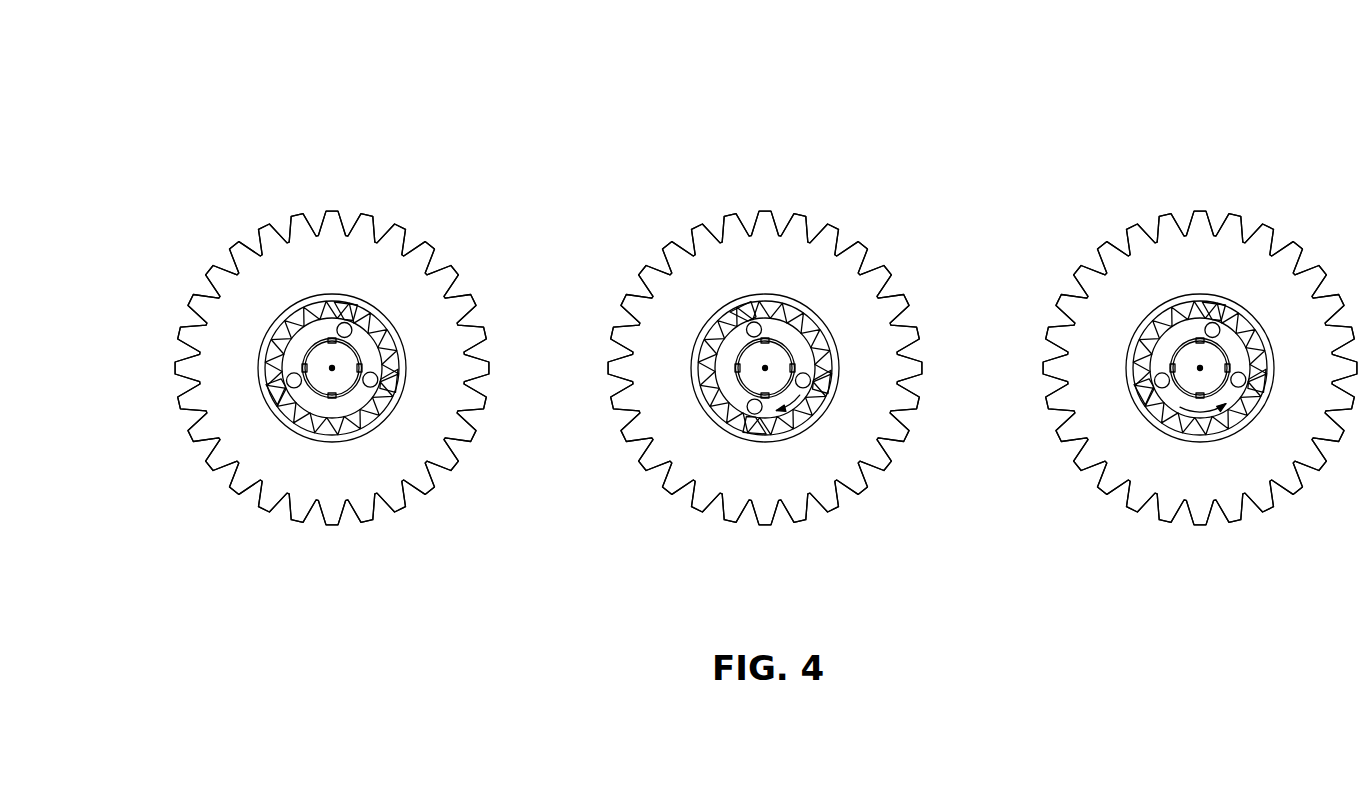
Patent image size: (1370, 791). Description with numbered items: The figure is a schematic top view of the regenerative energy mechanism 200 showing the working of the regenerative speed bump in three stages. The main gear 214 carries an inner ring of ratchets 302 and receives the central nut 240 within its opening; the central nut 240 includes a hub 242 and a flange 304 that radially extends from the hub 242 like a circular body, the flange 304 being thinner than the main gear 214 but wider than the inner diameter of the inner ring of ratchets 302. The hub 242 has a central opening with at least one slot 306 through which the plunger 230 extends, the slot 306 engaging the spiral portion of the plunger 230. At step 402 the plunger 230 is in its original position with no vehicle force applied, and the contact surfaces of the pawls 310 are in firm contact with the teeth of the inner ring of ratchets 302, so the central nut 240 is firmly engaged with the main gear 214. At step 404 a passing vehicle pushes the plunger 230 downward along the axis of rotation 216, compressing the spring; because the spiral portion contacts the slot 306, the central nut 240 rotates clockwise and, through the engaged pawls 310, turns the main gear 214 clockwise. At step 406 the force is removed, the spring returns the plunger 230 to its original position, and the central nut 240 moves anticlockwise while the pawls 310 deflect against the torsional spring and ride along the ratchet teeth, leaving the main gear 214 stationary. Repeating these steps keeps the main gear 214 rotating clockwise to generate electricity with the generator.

The regenerative energy mechanism 200 is at (188, 156).
The step 402 is at (309, 136).
The step 404 is at (633, 220).
The step 406 is at (1176, 136).
The main gear 214 is at (766, 342).
The axis of rotation 216 is at (674, 297).
The plunger 230 is at (827, 300).
The inner ring of ratchets 302 is at (766, 439).
The flange 304 is at (689, 406).
The slot 306 is at (682, 365).
The pawl 310 is at (672, 442).
The hub 242 is at (739, 428).
The central nut 240 is at (794, 427).